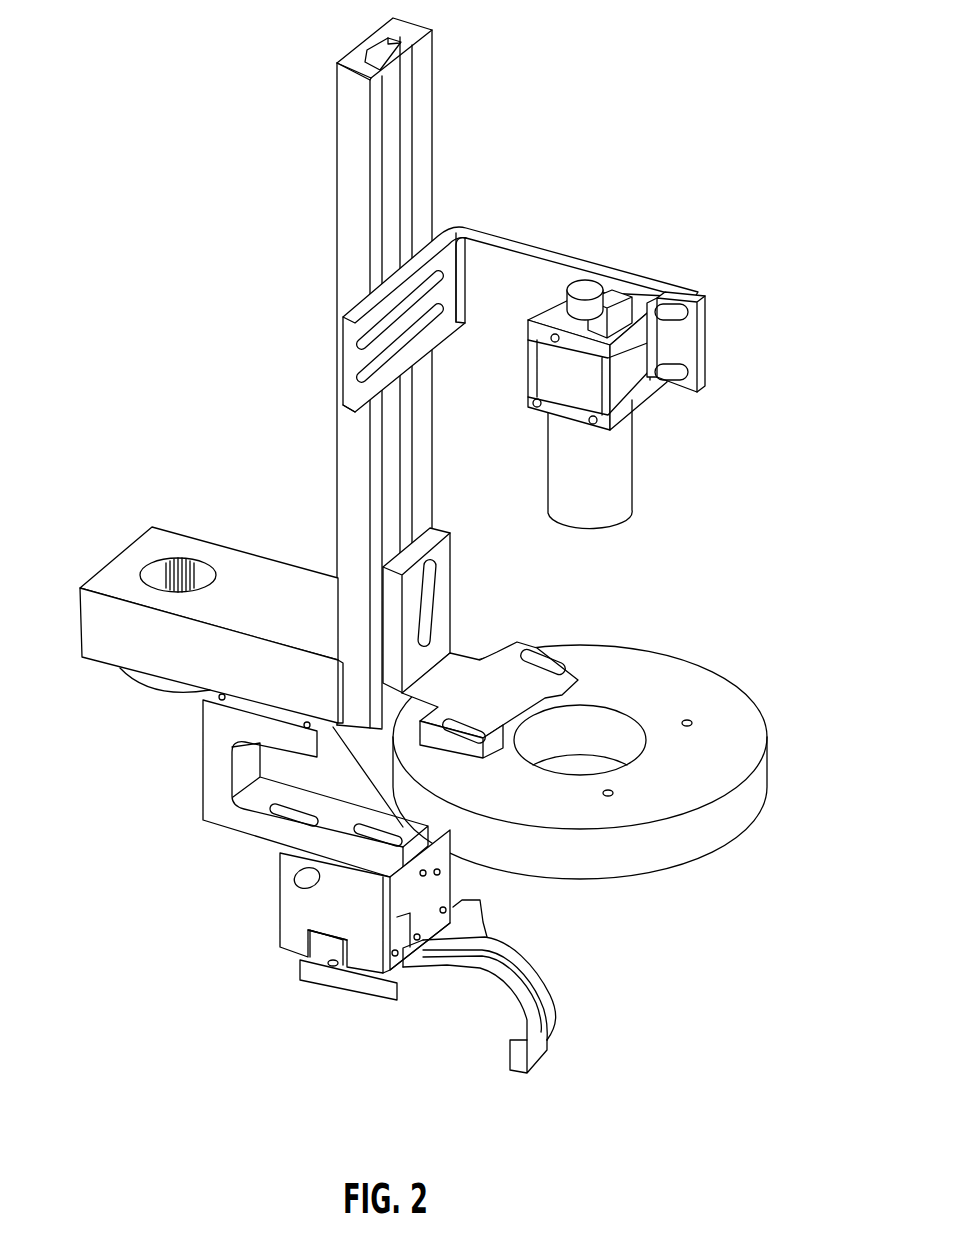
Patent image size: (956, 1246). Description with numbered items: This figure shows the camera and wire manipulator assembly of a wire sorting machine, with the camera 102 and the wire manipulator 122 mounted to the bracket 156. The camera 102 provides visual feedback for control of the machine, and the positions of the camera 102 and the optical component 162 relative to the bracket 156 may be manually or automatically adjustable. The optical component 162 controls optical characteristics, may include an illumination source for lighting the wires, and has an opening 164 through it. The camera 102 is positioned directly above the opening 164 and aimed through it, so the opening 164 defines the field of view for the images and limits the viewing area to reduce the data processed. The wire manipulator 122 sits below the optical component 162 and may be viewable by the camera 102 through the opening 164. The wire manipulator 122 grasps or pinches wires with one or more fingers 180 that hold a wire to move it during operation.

The camera 102 is at (617, 460).
The bracket 156 is at (243, 570).
The optical component 162 is at (597, 733).
The opening 164 is at (583, 732).
The wire manipulator 122 is at (521, 992).
The fingers 180 is at (515, 1028).